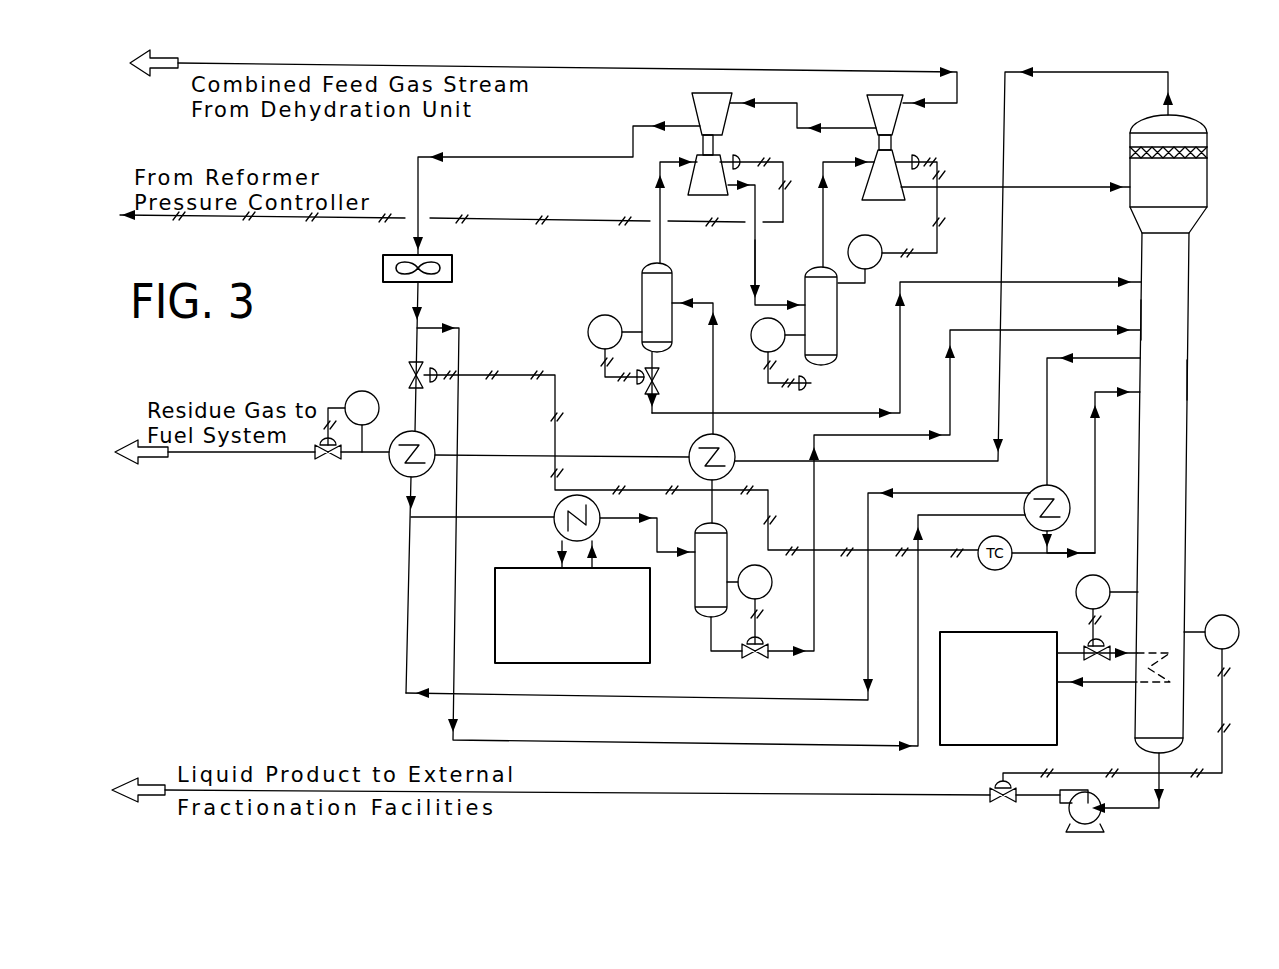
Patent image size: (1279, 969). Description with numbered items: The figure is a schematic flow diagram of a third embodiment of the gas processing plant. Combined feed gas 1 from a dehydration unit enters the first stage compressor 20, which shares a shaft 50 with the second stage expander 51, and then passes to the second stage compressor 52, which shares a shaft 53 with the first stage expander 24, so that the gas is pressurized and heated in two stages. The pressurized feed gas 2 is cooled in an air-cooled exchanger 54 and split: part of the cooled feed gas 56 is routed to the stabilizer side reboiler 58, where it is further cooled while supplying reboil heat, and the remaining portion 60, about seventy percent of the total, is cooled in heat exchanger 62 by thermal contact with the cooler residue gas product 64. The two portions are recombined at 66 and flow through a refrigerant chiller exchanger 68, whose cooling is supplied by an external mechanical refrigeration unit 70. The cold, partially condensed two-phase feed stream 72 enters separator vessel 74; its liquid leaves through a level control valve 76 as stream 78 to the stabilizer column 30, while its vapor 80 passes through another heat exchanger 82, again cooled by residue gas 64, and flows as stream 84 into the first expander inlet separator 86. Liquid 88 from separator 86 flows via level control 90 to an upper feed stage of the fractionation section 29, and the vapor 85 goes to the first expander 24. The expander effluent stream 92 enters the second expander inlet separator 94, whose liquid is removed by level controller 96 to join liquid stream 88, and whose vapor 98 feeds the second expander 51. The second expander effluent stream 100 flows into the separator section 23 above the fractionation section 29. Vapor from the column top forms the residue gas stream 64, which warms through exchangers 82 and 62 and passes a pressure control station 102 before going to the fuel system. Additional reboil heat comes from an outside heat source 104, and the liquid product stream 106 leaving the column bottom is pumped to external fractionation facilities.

The combined feed gas 1 is at (650, 74).
The pressurized feed gas 2 is at (530, 157).
The first stage compressor 20 is at (862, 108).
The separator section 23 is at (1214, 178).
The first stage expander 24 is at (736, 245).
The fractionation section 29 is at (1192, 318).
The stabilizer column 30 is at (1192, 374).
The shaft 50 is at (895, 152).
The second stage expander 51 is at (860, 182).
The second stage compressor 52 is at (727, 92).
The shaft 53 is at (718, 152).
The air-cooled exchanger 54 is at (457, 268).
The cooled feed gas 56 is at (460, 354).
The stabilizer side reboiler 58 is at (1082, 482).
The remaining portion of the feed gas 60 is at (410, 352).
The heat exchanger 62 is at (440, 420).
The residue gas product 64 is at (510, 456).
The recombined feed gas 66 is at (404, 517).
The refrigerant chiller exchanger 68 is at (553, 514).
The external mechanical refrigeration unit 70 is at (656, 600).
The two-phase feed stream 72 is at (699, 559).
The separator vessel 74 is at (696, 595).
The level control valve 76 is at (766, 636).
The liquid stream 78 is at (814, 532).
The vapor 80 is at (716, 526).
The heat exchanger 82 is at (692, 450).
The stream 84 is at (653, 390).
The vapor 85 is at (660, 244).
The first expander inlet separator 86 is at (636, 300).
The liquid 88 is at (770, 412).
The level control 90 is at (586, 335).
The partially condensed stream 92 is at (755, 254).
The second expander inlet separator 94 is at (800, 291).
The level controller 96 is at (760, 334).
The vapor 98 is at (820, 214).
The second expander effluent stream 100 is at (1066, 189).
The pressure control station 102 is at (369, 390).
The outside heat source 104 is at (1006, 626).
The liquid product stream 106 is at (1163, 792).